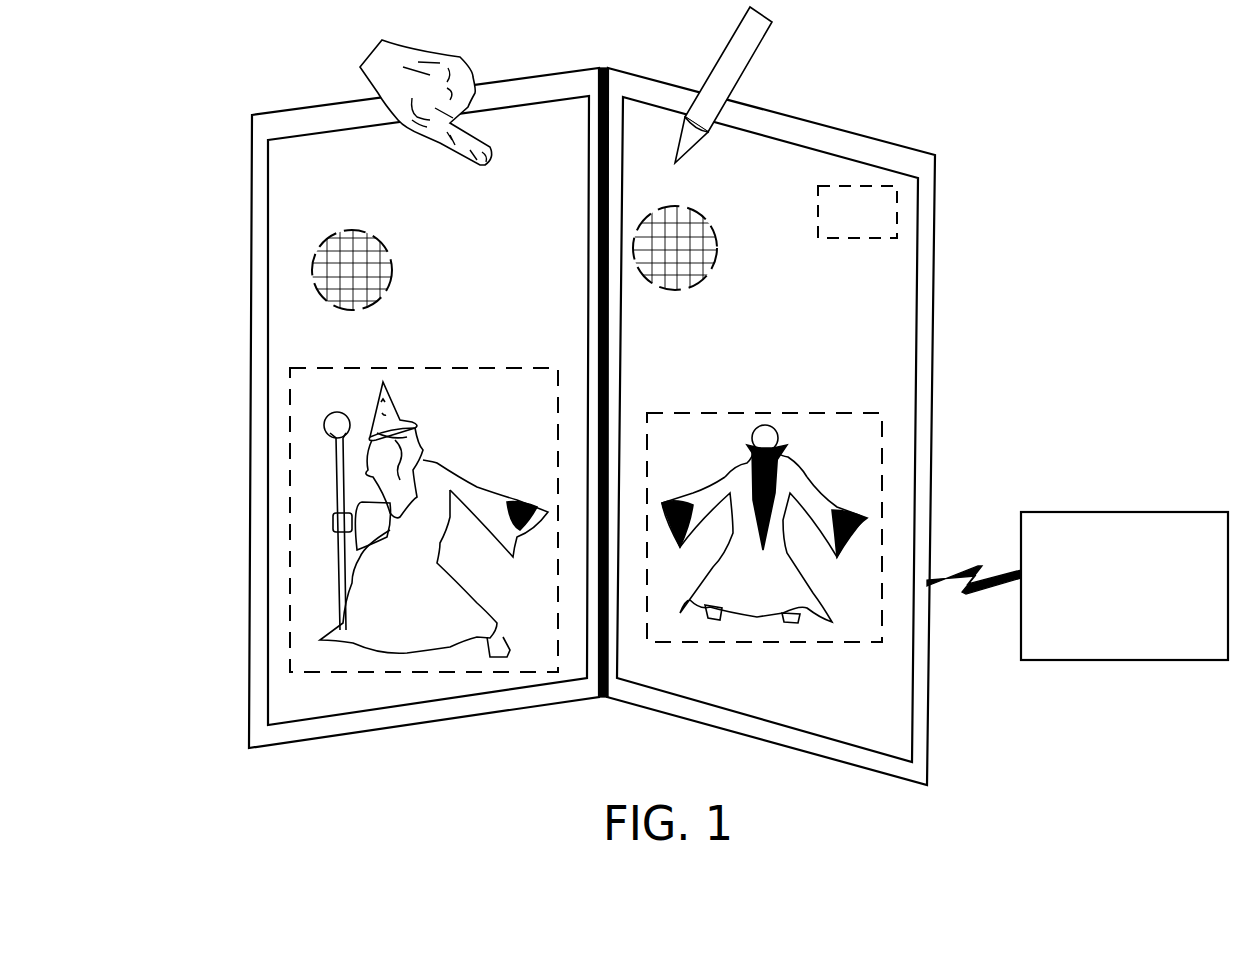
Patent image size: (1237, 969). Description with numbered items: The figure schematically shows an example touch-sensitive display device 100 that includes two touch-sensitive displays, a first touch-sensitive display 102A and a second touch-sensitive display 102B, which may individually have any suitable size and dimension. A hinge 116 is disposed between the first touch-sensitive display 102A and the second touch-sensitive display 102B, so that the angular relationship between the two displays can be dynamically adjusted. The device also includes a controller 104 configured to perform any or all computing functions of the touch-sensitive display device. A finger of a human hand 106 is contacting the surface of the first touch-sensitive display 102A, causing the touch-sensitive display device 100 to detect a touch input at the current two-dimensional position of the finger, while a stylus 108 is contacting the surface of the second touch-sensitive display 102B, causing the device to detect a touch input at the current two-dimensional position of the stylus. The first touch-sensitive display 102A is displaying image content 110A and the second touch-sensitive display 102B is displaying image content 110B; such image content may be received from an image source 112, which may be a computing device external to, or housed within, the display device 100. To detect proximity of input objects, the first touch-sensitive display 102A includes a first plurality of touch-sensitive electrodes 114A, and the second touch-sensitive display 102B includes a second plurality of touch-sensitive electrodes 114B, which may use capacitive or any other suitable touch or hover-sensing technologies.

The touch-sensitive display device 100 is at (590, 409).
The first touch-sensitive display 102A is at (270, 277).
The second touch-sensitive display 102B is at (918, 278).
The controller 104 is at (857, 212).
The human hand 106 is at (382, 40).
The stylus 108 is at (728, 45).
The image content 110A is at (523, 367).
The image content 110B is at (810, 413).
The image source 112 is at (1077, 586).
The first plurality of touch-sensitive electrodes 114A is at (383, 242).
The second plurality of touch-sensitive electrodes 114B is at (707, 220).
The hinge 116 is at (600, 68).